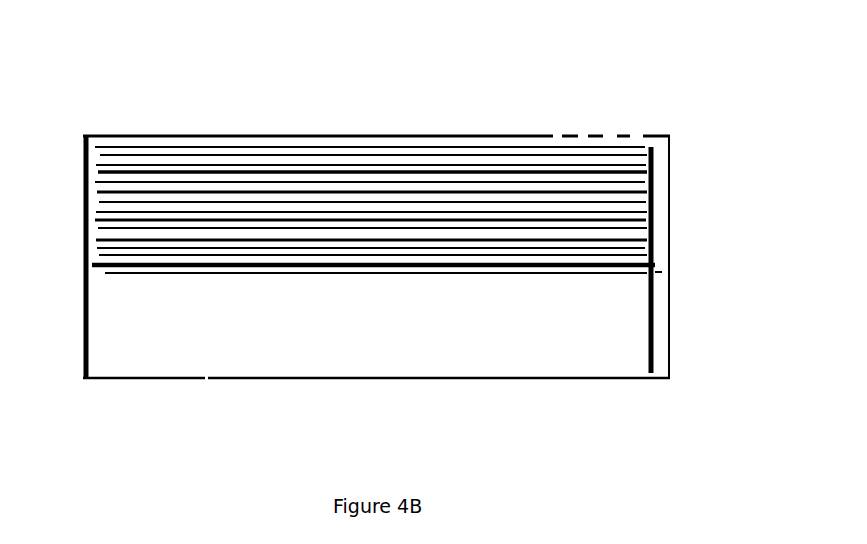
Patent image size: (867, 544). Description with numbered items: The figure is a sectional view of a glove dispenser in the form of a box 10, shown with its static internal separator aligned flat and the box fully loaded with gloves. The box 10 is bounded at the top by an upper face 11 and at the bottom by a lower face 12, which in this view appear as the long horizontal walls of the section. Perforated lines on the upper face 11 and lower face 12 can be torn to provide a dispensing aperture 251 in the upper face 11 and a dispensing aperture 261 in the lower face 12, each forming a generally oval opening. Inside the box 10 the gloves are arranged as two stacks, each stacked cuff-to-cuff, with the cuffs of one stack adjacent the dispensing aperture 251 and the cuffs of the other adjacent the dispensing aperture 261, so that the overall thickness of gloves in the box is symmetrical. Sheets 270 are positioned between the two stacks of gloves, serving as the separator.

The box 10 is at (285, 127).
The upper face 11 is at (132, 136).
The lower face 12 is at (292, 378).
The dispensing aperture 251 is at (570, 135).
The dispensing aperture 261 is at (148, 378).
The sheets 270 is at (367, 203).